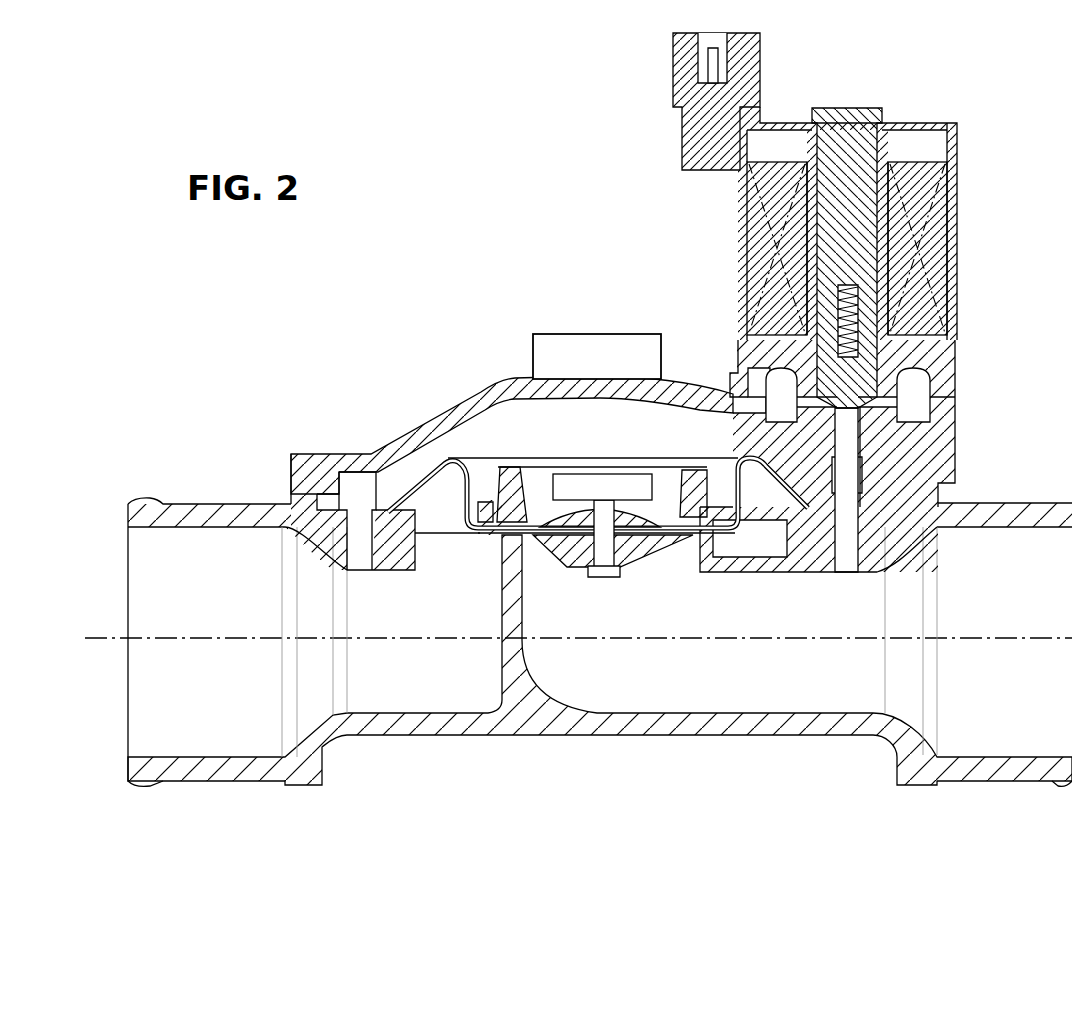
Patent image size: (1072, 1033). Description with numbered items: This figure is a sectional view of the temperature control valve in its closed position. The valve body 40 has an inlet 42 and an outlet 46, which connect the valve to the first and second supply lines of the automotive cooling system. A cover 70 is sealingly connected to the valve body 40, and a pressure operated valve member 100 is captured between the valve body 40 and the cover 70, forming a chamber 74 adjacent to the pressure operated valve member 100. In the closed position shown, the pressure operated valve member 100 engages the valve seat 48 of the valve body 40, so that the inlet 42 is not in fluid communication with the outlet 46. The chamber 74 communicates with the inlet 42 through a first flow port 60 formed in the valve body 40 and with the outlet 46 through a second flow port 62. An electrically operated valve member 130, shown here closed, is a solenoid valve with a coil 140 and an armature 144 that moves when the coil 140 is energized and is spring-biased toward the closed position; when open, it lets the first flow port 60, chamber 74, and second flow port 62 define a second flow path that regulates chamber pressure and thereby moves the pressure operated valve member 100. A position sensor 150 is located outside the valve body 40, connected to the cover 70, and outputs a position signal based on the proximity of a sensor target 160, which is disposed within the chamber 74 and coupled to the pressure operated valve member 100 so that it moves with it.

The valve body 40 is at (180, 503).
The inlet 42 is at (193, 606).
The outlet 46 is at (1004, 611).
The valve seat 48 is at (690, 540).
The first flow port 60 is at (293, 498).
The second flow port 62 is at (840, 565).
The cover 70 is at (400, 437).
The chamber 74 is at (584, 436).
The pressure operated valve member 100 is at (480, 455).
The electrically operated valve member 130 is at (947, 122).
The coil 140 is at (940, 228).
The armature 144 is at (863, 348).
The position sensor 150 is at (550, 334).
The sensor target 160 is at (645, 474).